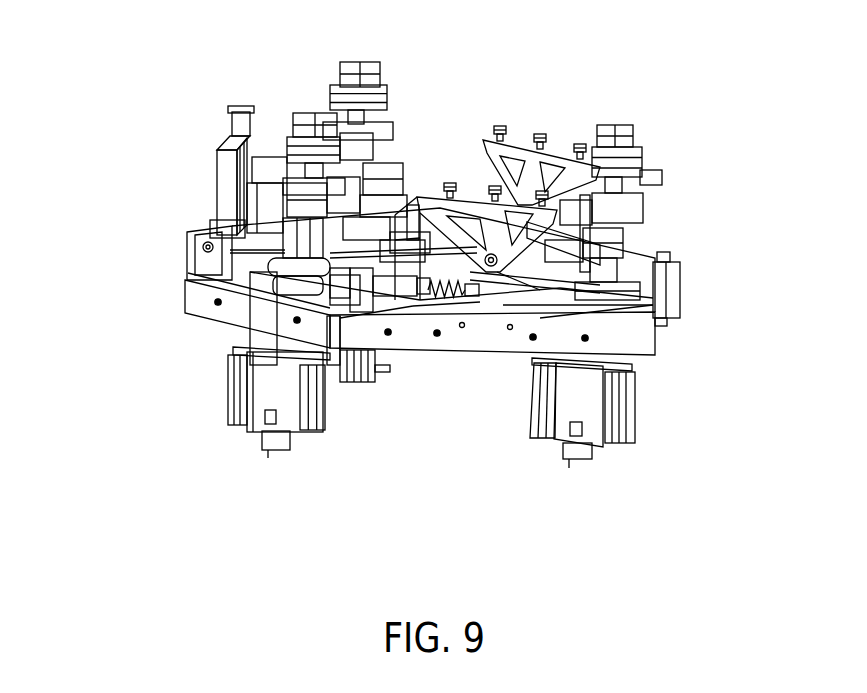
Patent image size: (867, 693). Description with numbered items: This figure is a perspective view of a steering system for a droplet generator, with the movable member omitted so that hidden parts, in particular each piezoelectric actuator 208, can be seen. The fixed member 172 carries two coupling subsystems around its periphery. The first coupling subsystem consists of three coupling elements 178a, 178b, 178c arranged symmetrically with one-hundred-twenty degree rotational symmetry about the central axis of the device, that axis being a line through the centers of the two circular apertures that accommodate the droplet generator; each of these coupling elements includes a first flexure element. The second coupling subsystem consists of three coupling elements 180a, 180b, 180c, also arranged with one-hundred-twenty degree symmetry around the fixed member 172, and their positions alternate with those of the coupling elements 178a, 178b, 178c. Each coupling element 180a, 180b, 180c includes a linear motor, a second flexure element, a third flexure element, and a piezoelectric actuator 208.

The fixed member 172 is at (668, 310).
The coupling element 178a is at (484, 285).
The coupling element 178b is at (520, 120).
The coupling element 178c is at (208, 162).
The coupling element 180a is at (638, 226).
The coupling element 180b is at (376, 167).
The coupling element 180c is at (267, 233).
The piezoelectric actuator 208 is at (322, 102).